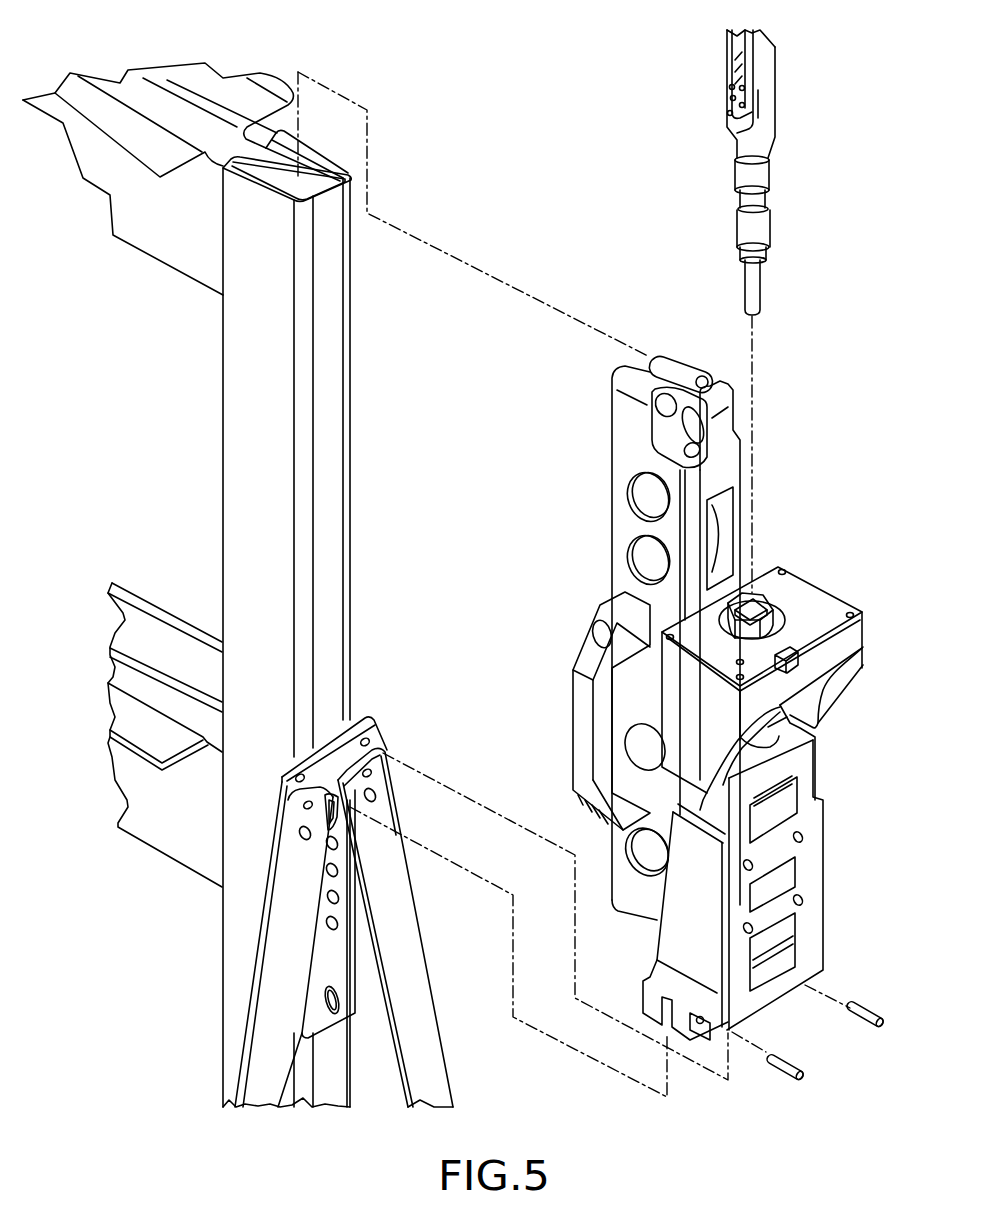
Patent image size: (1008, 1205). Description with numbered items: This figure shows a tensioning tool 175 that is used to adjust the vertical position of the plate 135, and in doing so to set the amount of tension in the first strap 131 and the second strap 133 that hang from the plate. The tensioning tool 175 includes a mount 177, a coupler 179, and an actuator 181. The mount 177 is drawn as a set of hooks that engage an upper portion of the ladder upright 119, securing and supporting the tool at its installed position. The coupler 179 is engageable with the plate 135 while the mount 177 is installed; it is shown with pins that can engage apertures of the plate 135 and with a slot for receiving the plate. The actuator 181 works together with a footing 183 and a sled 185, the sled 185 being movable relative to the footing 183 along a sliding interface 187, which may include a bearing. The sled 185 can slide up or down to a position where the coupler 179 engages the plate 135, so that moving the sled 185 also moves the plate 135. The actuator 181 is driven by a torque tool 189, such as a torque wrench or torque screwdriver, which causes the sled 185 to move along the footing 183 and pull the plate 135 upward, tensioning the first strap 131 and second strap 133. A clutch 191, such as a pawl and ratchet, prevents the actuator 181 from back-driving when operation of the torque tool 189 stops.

The ladder upright 119 is at (340, 310).
The first strap 131 is at (272, 996).
The second strap 133 is at (432, 1060).
The plate 135 is at (368, 720).
The tensioning tool 175 is at (836, 478).
The mount 177 is at (647, 352).
The coupler 179 is at (846, 968).
The actuator 181 is at (848, 640).
The footing 183 is at (620, 528).
The sled 185 is at (810, 601).
The sliding interface 187 is at (687, 793).
The torque tool 189 is at (773, 102).
The clutch 191 is at (777, 600).